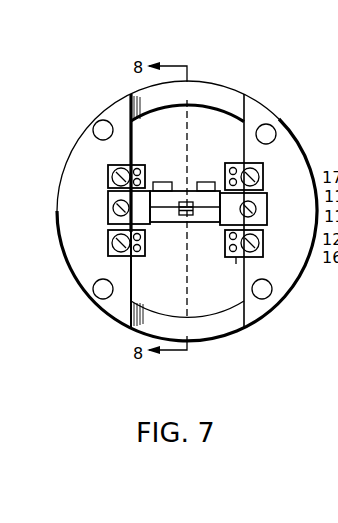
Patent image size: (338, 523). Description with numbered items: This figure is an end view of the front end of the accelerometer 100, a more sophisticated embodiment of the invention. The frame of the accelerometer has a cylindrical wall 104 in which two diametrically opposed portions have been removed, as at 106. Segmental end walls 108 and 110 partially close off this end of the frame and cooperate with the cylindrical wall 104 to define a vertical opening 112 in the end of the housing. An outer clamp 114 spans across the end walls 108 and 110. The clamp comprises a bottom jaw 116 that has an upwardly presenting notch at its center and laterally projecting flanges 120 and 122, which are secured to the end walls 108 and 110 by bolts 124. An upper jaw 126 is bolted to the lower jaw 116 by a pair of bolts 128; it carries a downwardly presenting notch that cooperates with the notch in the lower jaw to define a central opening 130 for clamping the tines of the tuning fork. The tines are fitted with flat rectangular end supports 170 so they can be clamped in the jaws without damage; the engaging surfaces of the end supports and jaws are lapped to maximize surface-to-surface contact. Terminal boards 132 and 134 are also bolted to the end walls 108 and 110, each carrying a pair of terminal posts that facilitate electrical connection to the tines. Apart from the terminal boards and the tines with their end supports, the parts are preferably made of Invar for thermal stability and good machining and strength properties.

The accelerometer 100 is at (204, 74).
The cylindrical wall 104 is at (232, 333).
The removed portions 106 is at (225, 80).
The segmental end wall 108 is at (115, 108).
The segmental end wall 110 is at (292, 160).
The vertical opening 112 is at (155, 117).
The outer clamp 114 is at (165, 235).
The bottom jaw 116 is at (189, 214).
The laterally projecting flange 120 is at (103, 200).
The laterally projecting flange 122 is at (258, 236).
The bolts 124 is at (107, 195).
The upper jaw 126 is at (212, 182).
The bolts 128 is at (131, 151).
The central opening 130 is at (170, 182).
The terminal board 132 is at (108, 172).
The terminal board 134 is at (252, 157).
The end support 170 is at (236, 264).